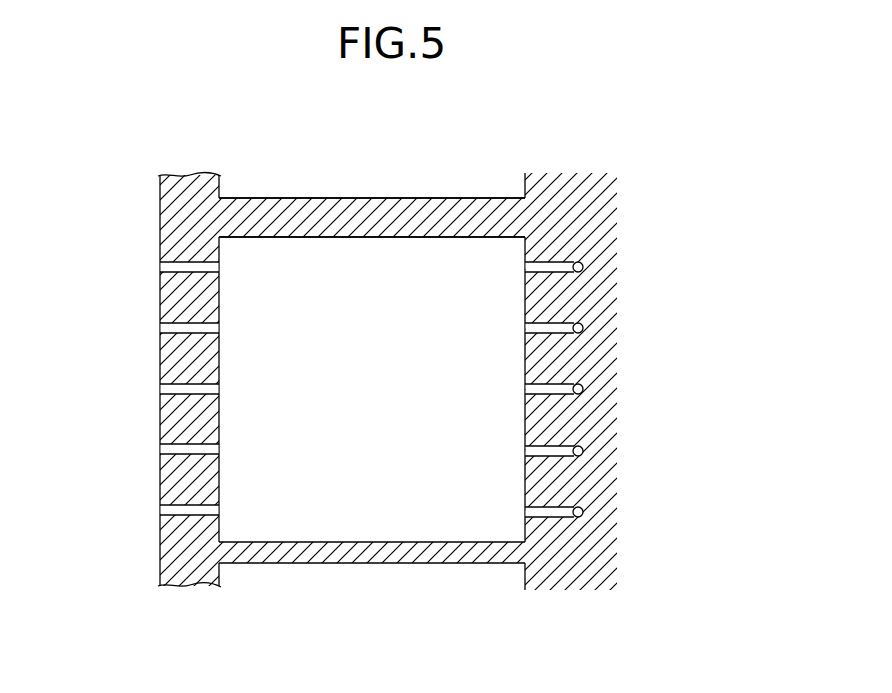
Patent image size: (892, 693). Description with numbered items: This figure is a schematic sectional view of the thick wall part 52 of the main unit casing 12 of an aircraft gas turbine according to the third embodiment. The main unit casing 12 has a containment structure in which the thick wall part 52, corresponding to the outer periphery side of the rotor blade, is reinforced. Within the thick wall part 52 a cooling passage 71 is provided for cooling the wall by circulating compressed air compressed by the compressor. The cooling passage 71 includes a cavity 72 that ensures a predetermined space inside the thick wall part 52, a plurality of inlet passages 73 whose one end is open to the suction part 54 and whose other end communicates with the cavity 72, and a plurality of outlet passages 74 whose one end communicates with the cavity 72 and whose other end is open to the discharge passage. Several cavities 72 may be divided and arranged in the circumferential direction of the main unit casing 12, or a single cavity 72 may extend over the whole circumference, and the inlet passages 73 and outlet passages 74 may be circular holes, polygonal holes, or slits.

The main unit casing 12 is at (657, 168).
The thick wall part 52 is at (343, 198).
The suction part 54 is at (47, 362).
The cooling passage 71 is at (461, 228).
The cavity 72 is at (297, 188).
The inlet passage 73 is at (181, 262).
The outlet passage 74 is at (558, 262).